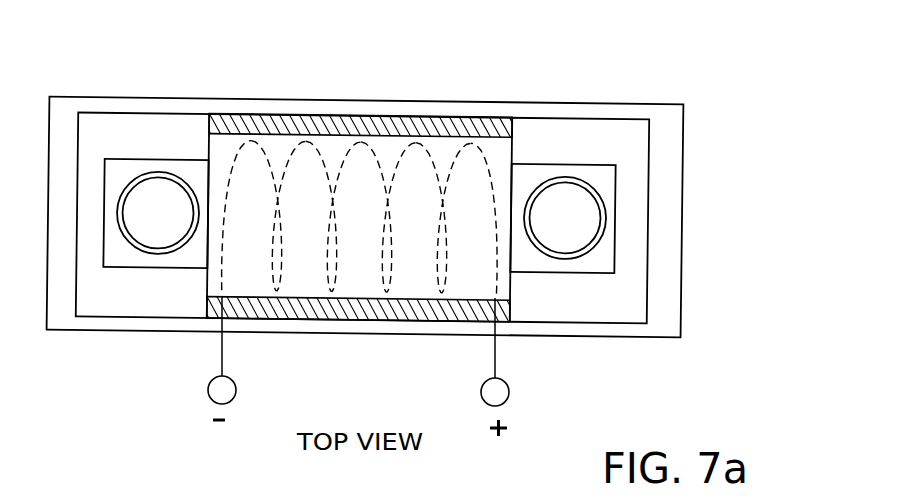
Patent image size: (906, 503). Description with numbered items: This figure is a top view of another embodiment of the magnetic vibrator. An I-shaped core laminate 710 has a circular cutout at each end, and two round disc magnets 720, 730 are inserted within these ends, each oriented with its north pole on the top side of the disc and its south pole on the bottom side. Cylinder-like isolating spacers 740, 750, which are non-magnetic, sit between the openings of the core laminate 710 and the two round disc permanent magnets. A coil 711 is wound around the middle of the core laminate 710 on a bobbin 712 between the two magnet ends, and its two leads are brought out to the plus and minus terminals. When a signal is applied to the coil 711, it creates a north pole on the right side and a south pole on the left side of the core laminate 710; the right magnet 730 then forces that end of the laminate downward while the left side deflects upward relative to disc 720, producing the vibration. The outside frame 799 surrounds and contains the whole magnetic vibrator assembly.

The "I" core laminate 710 is at (157, 252).
The coil 711 is at (378, 168).
The bobbin 712 is at (449, 124).
The round disc magnet 720 is at (150, 202).
The round disc magnet 730 is at (555, 205).
The isolating spacer 740 is at (193, 255).
The isolating spacer 750 is at (590, 190).
The outside frame 799 is at (672, 328).